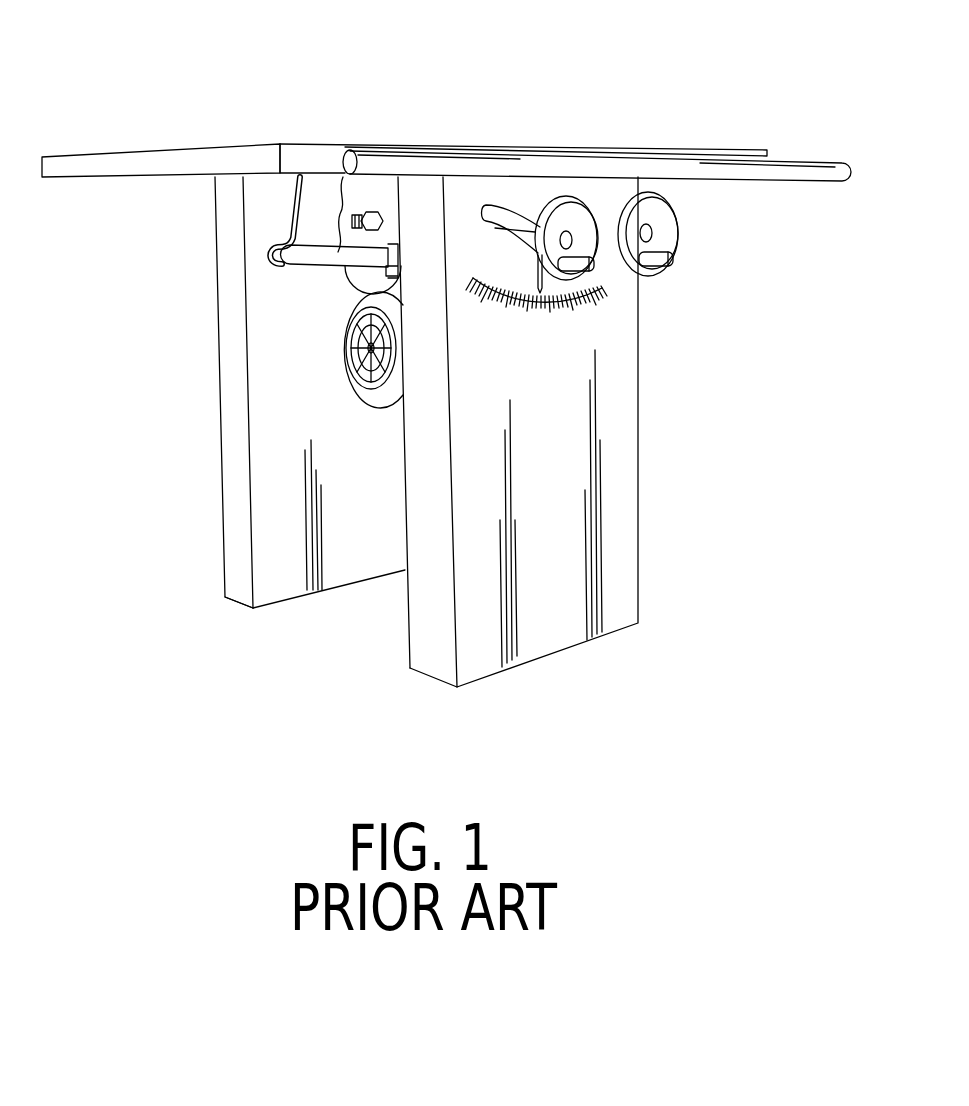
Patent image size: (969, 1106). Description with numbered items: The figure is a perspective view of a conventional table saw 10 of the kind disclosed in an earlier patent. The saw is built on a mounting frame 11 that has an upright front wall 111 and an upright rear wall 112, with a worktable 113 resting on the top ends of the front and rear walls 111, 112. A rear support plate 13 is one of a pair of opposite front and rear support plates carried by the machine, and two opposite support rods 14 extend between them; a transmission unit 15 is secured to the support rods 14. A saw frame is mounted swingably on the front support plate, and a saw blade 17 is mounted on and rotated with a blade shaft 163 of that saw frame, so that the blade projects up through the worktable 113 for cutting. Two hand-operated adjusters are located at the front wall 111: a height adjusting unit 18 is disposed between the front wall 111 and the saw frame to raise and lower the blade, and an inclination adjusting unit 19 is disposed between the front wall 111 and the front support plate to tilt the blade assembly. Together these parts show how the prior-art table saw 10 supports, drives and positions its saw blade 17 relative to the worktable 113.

The table saw 10 is at (684, 125).
The mounting frame 11 is at (640, 577).
The front wall 111 is at (620, 507).
The rear wall 112 is at (237, 502).
The worktable 113 is at (90, 163).
The rear support plate 13 is at (308, 203).
The support rods 14 is at (300, 253).
The transmission unit 15 is at (345, 353).
The saw blade 17 is at (342, 195).
The blade shaft 163 is at (367, 212).
The height adjusting unit 18 is at (598, 258).
The inclination adjusting unit 19 is at (678, 220).